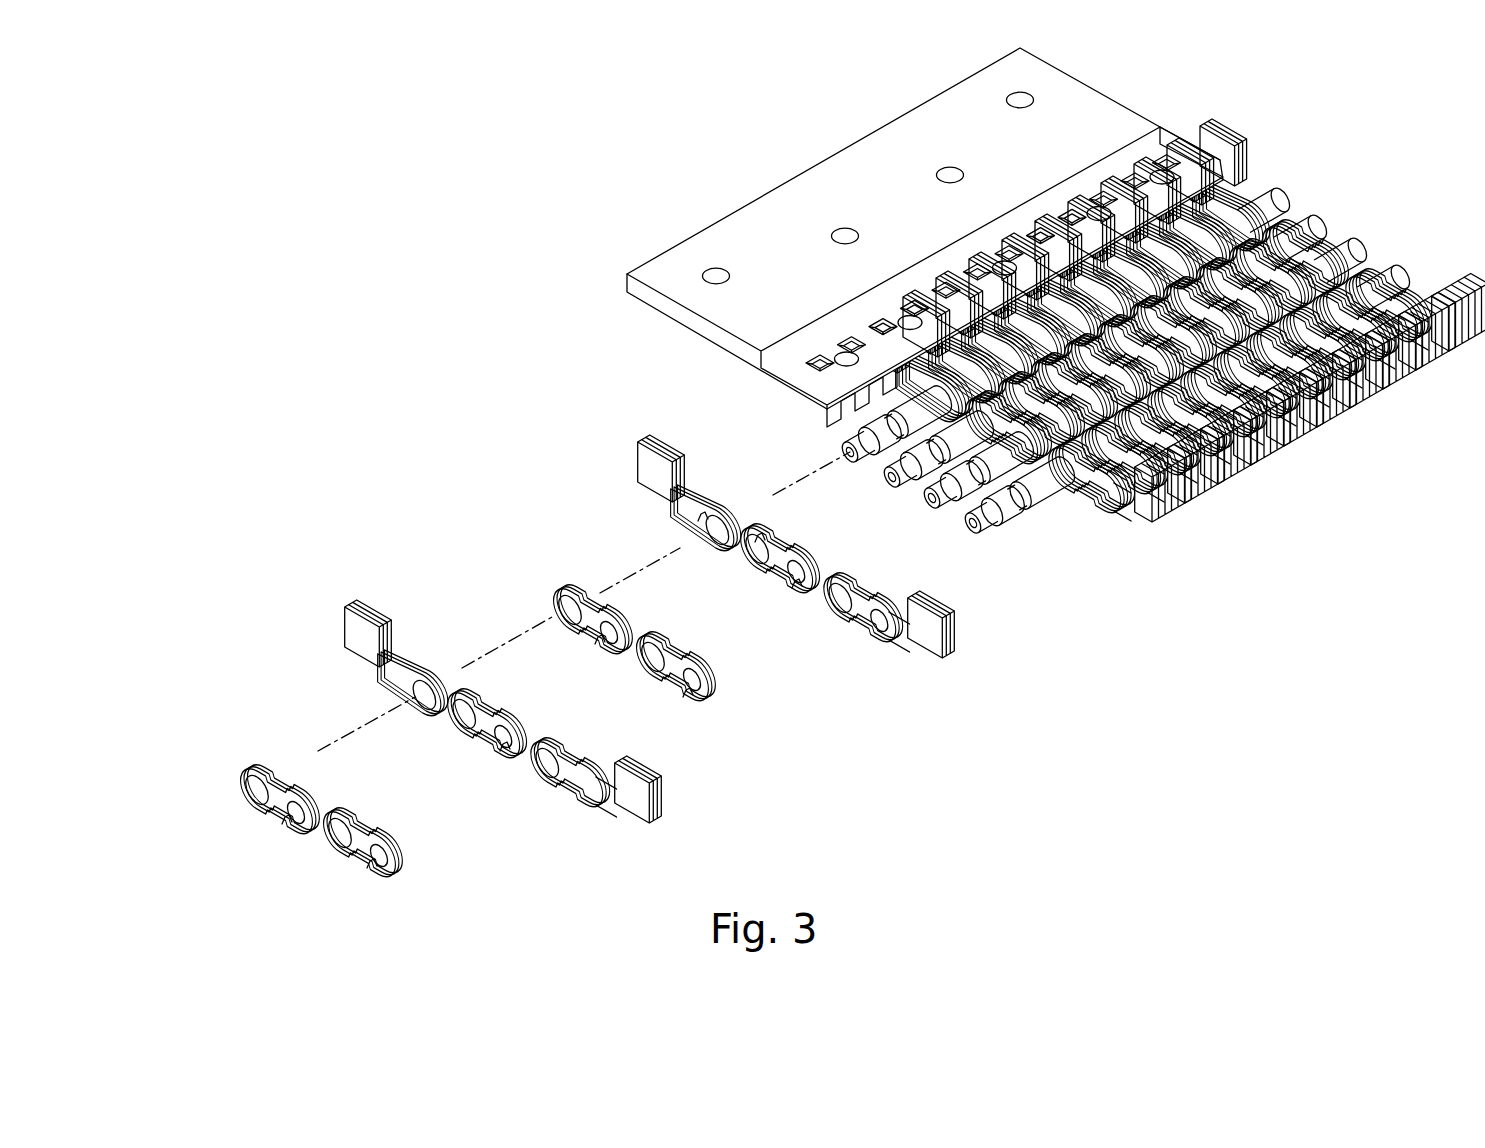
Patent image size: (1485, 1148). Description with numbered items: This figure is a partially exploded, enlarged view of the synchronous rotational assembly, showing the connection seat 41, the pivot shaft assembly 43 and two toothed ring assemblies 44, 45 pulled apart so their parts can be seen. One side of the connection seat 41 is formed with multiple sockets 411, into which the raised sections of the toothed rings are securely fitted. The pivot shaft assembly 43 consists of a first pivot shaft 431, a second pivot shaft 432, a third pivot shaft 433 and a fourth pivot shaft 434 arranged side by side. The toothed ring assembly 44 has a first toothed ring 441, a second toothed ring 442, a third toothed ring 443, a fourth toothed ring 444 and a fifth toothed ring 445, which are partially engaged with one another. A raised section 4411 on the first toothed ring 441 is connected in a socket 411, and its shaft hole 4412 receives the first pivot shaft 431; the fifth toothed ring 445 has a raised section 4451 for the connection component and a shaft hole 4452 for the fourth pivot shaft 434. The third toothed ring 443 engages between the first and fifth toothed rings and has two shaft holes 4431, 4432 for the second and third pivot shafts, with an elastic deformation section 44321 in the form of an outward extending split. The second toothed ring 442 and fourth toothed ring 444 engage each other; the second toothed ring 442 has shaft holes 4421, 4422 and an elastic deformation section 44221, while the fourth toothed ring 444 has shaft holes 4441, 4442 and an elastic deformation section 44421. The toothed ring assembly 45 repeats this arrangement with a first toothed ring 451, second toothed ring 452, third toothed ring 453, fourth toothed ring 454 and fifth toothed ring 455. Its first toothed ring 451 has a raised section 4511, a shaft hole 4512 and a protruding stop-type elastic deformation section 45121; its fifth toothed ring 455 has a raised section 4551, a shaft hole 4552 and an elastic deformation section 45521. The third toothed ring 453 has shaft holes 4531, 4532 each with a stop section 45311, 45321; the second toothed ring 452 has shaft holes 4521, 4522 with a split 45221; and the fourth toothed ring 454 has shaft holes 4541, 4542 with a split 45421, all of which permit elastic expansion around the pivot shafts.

The connection seat 41 is at (925, 237).
The socket 411 is at (980, 268).
The pivot shaft assembly 43 is at (963, 518).
The first pivot shaft 431 is at (860, 458).
The second pivot shaft 432 is at (900, 482).
The third pivot shaft 433 is at (940, 505).
The fourth pivot shaft 434 is at (1025, 515).
The toothed ring assembly 44 is at (391, 740).
The first toothed ring 441 is at (362, 634).
The raised section 4411 is at (362, 622).
The shaft hole 4412 is at (416, 695).
The second toothed ring 442 is at (226, 827).
The shaft hole 4421 is at (250, 790).
The shaft hole 4422 is at (295, 830).
The elastic deformation section 44221 is at (285, 815).
The third toothed ring 443 is at (435, 762).
The shaft hole 4431 is at (455, 718).
The shaft hole 4432 is at (520, 757).
The elastic deformation section 44321 is at (505, 742).
The fourth toothed ring 444 is at (376, 874).
The shaft hole 4441 is at (335, 840).
The shaft hole 4442 is at (380, 870).
The elastic deformation section 44421 is at (370, 860).
The fifth toothed ring 445 is at (584, 811).
The raised section 4451 is at (630, 802).
The shaft hole 4452 is at (555, 775).
The toothed ring assembly 45 is at (707, 570).
The first toothed ring 451 is at (644, 481).
The raised section 4511 is at (668, 452).
The shaft hole 4512 is at (715, 535).
The elastic deformation section 45121 is at (700, 516).
The second toothed ring 452 is at (529, 615).
The shaft hole 4521 is at (560, 612).
The shaft hole 4522 is at (615, 650).
The elastic deformation section 45221 is at (600, 638).
The third toothed ring 453 is at (761, 557).
The shaft hole 4531 is at (757, 552).
The elastic deformation section 45311 is at (760, 540).
The shaft hole 4532 is at (805, 585).
The elastic deformation section 45321 is at (795, 580).
The fourth toothed ring 454 is at (675, 701).
The shaft hole 4541 is at (650, 662).
The shaft hole 4542 is at (700, 690).
The elastic deformation section 45421 is at (690, 700).
The fifth toothed ring 455 is at (883, 647).
The raised section 4551 is at (930, 645).
The shaft hole 4552 is at (840, 605).
The elastic deformation section 45521 is at (870, 620).